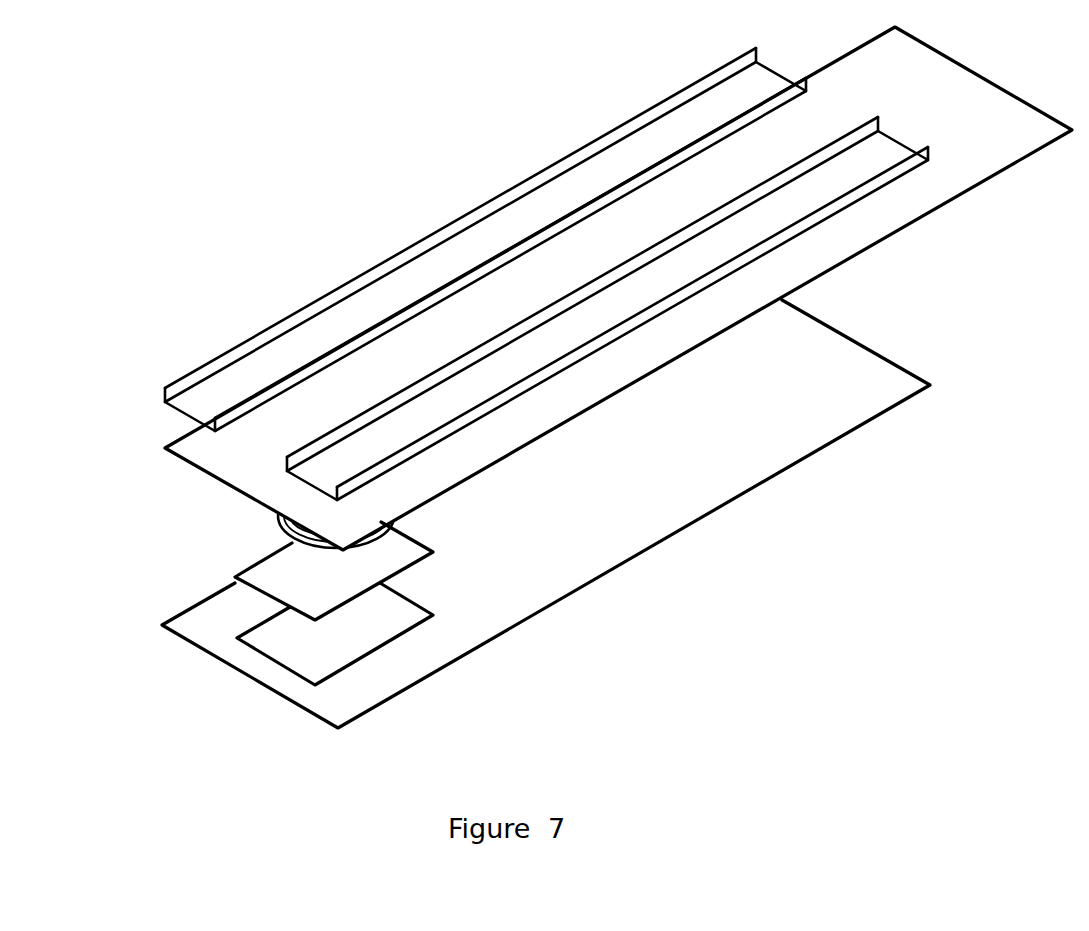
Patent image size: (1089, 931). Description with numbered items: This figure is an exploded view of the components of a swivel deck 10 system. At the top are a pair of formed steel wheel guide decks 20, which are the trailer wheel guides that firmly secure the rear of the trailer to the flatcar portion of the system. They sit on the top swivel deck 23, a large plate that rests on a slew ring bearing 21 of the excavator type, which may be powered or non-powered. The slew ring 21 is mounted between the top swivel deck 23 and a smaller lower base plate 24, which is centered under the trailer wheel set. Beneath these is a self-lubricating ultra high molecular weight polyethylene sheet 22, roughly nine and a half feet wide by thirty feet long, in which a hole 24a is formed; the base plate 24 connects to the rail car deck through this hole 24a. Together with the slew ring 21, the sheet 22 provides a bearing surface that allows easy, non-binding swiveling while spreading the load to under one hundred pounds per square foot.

The swivel deck 10 is at (385, 208).
The wheel guide decks 20 is at (547, 342).
The slew ring bearing 21 is at (283, 533).
The UHMWPE sheet 22 is at (675, 500).
The top swivel deck 23 is at (972, 160).
The lower base plate 24 is at (380, 563).
The hole 24a is at (363, 618).